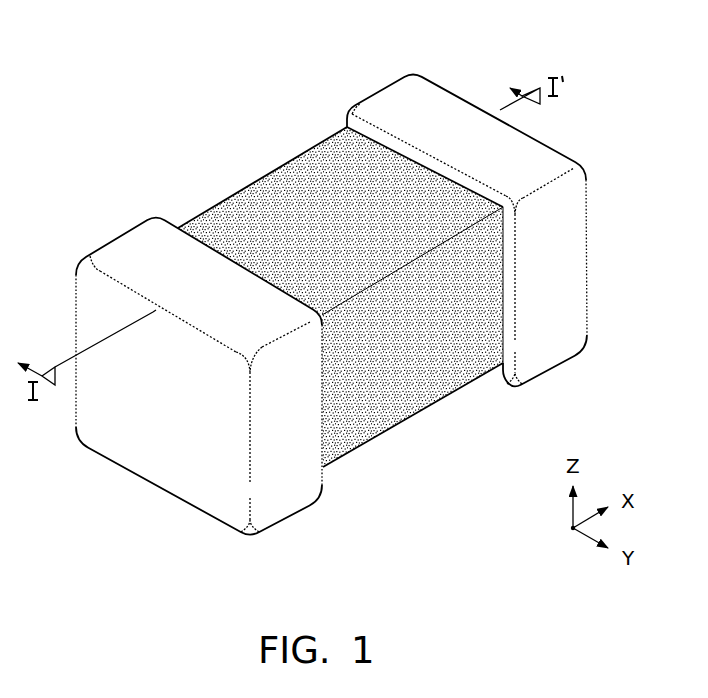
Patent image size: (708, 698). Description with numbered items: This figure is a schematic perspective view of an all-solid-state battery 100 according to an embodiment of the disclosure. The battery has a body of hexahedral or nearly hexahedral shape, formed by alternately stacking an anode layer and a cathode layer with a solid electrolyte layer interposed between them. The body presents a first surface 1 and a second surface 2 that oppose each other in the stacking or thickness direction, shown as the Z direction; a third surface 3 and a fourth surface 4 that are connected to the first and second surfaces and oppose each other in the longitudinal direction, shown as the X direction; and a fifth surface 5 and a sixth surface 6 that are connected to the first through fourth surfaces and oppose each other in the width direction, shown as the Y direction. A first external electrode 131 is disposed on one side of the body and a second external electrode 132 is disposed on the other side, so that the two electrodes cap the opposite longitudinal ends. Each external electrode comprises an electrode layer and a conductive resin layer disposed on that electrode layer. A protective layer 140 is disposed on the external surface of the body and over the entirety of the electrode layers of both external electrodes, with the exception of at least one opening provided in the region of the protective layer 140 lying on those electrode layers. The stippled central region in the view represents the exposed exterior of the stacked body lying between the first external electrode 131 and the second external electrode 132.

The all-solid-state battery 100 is at (142, 48).
The first external electrode 131 is at (132, 232).
The second external electrode 132 is at (390, 97).
The protective layer 140 is at (213, 222).
The first surface 1 is at (388, 432).
The second surface 2 is at (325, 176).
The third surface 3 is at (158, 462).
The fourth surface 4 is at (465, 96).
The fifth surface 5 is at (448, 368).
The sixth surface 6 is at (266, 176).